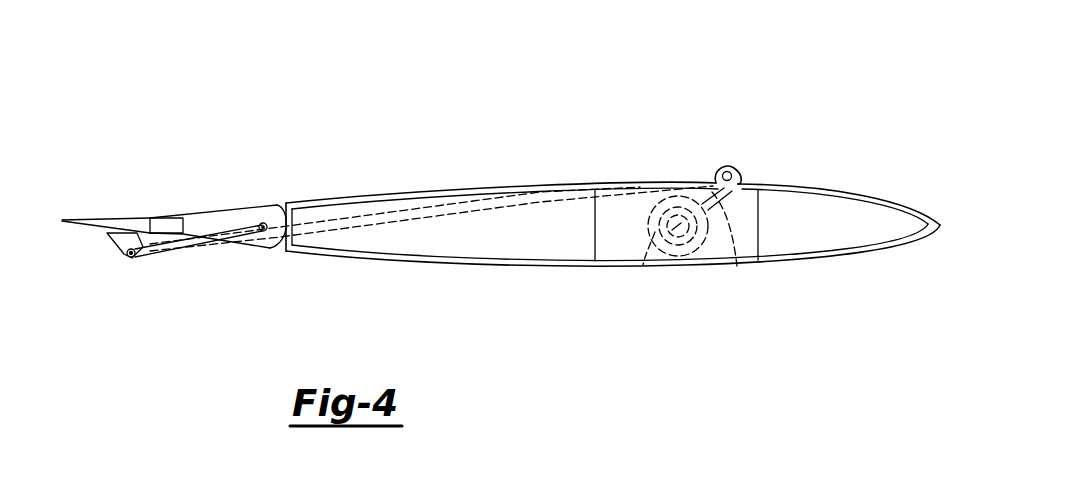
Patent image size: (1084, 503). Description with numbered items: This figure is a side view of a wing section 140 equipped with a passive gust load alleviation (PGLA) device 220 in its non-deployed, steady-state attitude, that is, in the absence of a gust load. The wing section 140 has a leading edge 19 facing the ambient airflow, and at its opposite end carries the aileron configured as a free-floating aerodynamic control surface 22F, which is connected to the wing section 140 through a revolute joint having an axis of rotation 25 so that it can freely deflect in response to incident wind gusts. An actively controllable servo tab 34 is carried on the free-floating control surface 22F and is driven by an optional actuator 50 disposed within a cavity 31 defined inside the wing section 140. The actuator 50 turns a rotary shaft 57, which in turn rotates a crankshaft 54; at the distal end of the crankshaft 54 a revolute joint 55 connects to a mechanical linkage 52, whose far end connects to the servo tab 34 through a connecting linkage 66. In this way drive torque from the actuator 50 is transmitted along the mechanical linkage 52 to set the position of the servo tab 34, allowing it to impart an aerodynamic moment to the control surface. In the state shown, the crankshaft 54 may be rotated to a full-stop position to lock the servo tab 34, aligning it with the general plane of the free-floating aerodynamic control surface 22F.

The wing section 140 is at (819, 72).
The leading edge 19 is at (942, 228).
The cavity 31 is at (418, 231).
The servo tab 34 is at (88, 211).
The passive gust load alleviation (PGLA) device 220 is at (148, 201).
The free-floating aerodynamic control surface 22F is at (197, 210).
The axis of rotation 25 is at (261, 231).
The connecting linkage 66 is at (112, 246).
The mechanical linkage 52 is at (378, 215).
The revolute joint 55 is at (736, 167).
The actuator 50 is at (670, 236).
The rotary shaft 57 is at (643, 265).
The crankshaft 54 is at (737, 266).